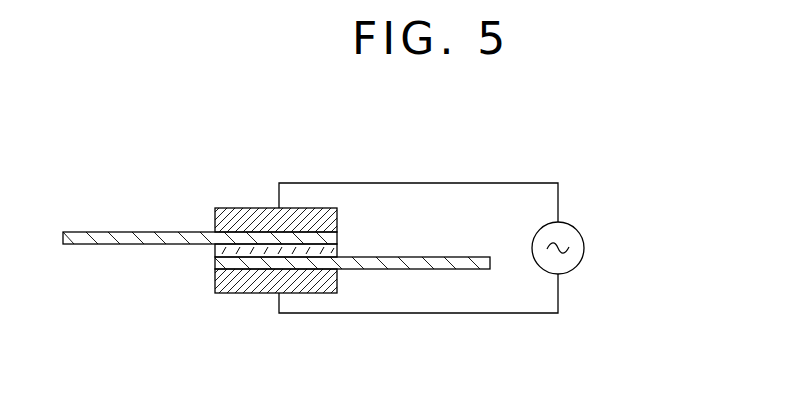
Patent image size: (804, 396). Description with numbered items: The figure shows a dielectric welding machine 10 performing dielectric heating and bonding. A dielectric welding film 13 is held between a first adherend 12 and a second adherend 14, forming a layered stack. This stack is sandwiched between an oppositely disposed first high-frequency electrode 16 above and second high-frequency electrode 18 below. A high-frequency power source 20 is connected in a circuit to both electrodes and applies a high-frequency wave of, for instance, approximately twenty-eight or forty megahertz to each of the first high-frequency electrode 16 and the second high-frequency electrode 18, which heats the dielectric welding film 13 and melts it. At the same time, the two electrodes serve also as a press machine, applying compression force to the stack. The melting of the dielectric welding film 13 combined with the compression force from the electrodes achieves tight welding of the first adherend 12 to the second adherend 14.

The dielectric welding machine 10 is at (588, 143).
The first adherend 12 is at (135, 232).
The dielectric welding film 13 is at (215, 252).
The second adherend 14 is at (443, 269).
The first high-frequency electrode 16 is at (318, 220).
The second high-frequency electrode 18 is at (320, 294).
The high-frequency power source 20 is at (585, 258).